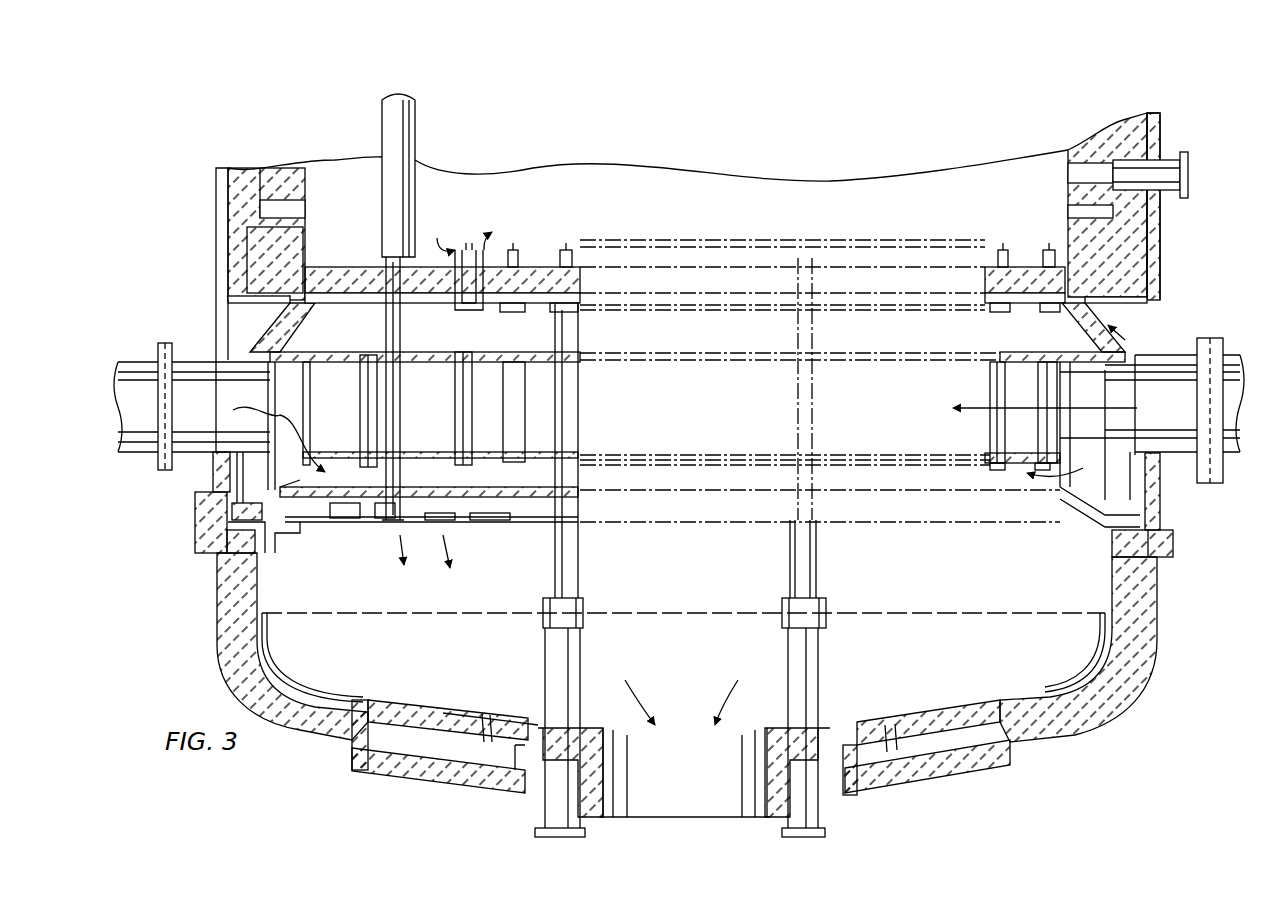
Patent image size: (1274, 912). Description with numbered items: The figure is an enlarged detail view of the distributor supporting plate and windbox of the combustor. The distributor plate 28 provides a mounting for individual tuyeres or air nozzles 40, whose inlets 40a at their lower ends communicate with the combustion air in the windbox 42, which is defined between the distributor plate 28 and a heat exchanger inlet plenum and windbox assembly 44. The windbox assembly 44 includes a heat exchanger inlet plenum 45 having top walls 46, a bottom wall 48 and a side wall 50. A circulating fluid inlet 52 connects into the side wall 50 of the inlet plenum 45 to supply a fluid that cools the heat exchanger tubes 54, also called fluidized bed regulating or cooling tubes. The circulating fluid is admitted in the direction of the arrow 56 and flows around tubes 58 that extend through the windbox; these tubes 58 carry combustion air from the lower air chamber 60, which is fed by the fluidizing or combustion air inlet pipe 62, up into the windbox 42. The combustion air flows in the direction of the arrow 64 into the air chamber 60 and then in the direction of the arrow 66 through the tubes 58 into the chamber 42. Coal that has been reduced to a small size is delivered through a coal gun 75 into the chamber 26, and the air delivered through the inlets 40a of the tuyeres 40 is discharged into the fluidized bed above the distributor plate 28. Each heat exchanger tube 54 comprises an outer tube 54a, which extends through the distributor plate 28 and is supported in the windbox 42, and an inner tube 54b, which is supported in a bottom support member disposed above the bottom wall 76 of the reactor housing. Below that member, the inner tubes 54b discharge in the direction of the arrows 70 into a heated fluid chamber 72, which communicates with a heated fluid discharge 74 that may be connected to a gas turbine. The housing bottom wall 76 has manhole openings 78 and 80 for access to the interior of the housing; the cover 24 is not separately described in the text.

The cover 24 is at (838, 212).
The chamber 26 is at (648, 181).
The distributor plate 28 is at (298, 265).
The tuyeres 40 is at (527, 265).
The inlets 40a is at (470, 318).
The windbox 42 is at (652, 342).
The windbox assembly 44 is at (1163, 313).
The heat exchanger inlet plenum 45 is at (1015, 412).
The top walls 46 is at (1033, 350).
The bottom wall 48 is at (1010, 465).
The side wall 50 is at (313, 380).
The circulating fluid inlet 52 is at (1222, 390).
The heat exchanger tubes 54 is at (445, 307).
The outer tube 54a is at (398, 190).
The inner tube 54b is at (408, 398).
The arrow 56 is at (978, 407).
The tubes 58 is at (522, 425).
The air chamber 60 is at (367, 522).
The combustion air inlet pipe 62 is at (143, 365).
The arrow 64 is at (264, 448).
The arrow 66 is at (360, 465).
The arrows 70 is at (393, 547).
The heated fluid chamber 72 is at (1158, 625).
The heated fluid discharge 74 is at (818, 820).
The coal gun 75 is at (800, 613).
The bottom wall 76 is at (1040, 707).
The manhole opening 78 is at (420, 778).
The manhole opening 80 is at (925, 768).